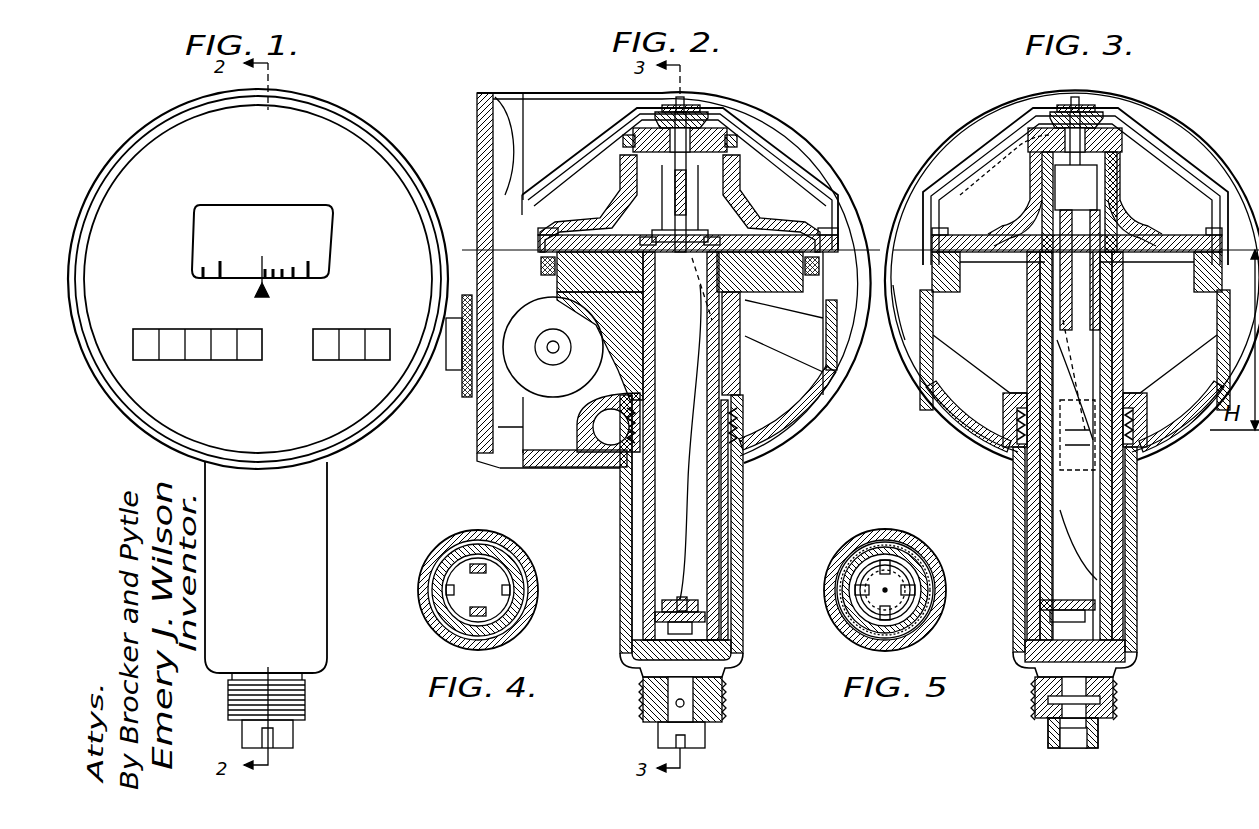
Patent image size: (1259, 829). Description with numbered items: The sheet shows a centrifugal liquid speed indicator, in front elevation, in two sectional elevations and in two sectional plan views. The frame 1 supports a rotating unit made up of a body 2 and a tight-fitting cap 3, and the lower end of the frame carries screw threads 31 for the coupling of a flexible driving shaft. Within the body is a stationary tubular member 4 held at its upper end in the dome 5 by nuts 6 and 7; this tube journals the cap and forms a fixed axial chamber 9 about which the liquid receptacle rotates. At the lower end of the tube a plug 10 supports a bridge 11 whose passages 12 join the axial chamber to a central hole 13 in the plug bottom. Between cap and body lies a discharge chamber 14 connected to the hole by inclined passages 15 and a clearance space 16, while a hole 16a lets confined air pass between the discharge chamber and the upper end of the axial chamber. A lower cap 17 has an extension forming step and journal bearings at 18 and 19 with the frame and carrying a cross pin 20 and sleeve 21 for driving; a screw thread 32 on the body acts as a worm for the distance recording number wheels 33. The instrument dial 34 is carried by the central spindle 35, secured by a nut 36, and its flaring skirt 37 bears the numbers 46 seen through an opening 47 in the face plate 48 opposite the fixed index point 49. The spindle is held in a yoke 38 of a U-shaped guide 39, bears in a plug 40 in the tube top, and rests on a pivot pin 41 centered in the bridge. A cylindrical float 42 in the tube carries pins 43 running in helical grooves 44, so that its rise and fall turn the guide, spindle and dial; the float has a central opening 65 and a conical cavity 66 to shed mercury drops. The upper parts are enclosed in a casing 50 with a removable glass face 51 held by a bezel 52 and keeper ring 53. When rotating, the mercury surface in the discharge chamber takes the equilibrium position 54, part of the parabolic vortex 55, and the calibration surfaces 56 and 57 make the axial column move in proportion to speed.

In FIG. 1, the frame 1 is at (306, 546).
In FIG. 2, the frame 1 is at (740, 488).
In FIG. 3, the frame 1 is at (1137, 508).
In FIG. 4, the frame 1 is at (533, 577).
In FIG. 5, the frame 1 is at (900, 563).
In FIG. 2, the body 2 is at (753, 310).
In FIG. 3, the body 2 is at (1117, 542).
In FIG. 4, the body 2 is at (510, 565).
In FIG. 5, the body 2 is at (895, 556).
In FIG. 2, the cap 3 is at (747, 220).
In FIG. 2, the stationary tubular member 4 is at (776, 500).
In FIG. 3, the stationary tubular member 4 is at (1103, 565).
In FIG. 4, the stationary tubular member 4 is at (490, 553).
In FIG. 5, the stationary tubular member 4 is at (887, 553).
In FIG. 2, the dome 5 is at (780, 163).
In FIG. 3, the dome 5 is at (1180, 197).
In FIG. 2, the nut 6 is at (795, 127).
In FIG. 3, the nut 6 is at (1064, 244).
In FIG. 2, the nut 7 is at (730, 136).
In FIG. 2, the axial chamber 9 is at (693, 517).
In FIG. 2, the plug 10 is at (713, 625).
In FIG. 5, the plug 10 is at (868, 540).
In FIG. 2, the bridge 11 is at (653, 623).
In FIG. 5, the bridge 11 is at (920, 600).
In FIG. 5, the passages 12 is at (905, 583).
In FIG. 2, the central hole 13 is at (660, 657).
In FIG. 2, the discharge chamber 14 is at (622, 230).
In FIG. 2, the inclined passages 15 is at (738, 347).
In FIG. 2, the clearance space 16 is at (643, 508).
In FIG. 3, the hole 16a is at (1140, 220).
In FIG. 2, the cap 17 is at (653, 640).
In FIG. 3, the cap 17 is at (1130, 648).
In FIG. 5, the cap 17 is at (920, 562).
In FIG. 2, the step bearing 18 is at (647, 682).
In FIG. 2, the journal bearing 19 is at (728, 679).
In FIG. 2, the cross pin 20 is at (697, 703).
In FIG. 3, the cross pin 20 is at (1113, 699).
In FIG. 1, the sleeve 21 is at (284, 738).
In FIG. 2, the sleeve 21 is at (710, 727).
In FIG. 3, the sleeve 21 is at (1053, 735).
In FIG. 1, the screw threads 31 is at (305, 694).
In FIG. 2, the screw threads 31 is at (647, 714).
In FIG. 2, the screw thread 32 is at (626, 432).
In FIG. 1, the distance recording number wheels 33 is at (226, 362).
In FIG. 2, the distance recording number wheels 33 is at (530, 380).
In FIG. 2, the instrument dial 34 is at (572, 163).
In FIG. 3, the instrument dial 34 is at (1163, 143).
In FIG. 2, the central spindle 35 is at (702, 121).
In FIG. 3, the central spindle 35 is at (1100, 120).
In FIG. 2, the nut 36 is at (683, 110).
In FIG. 3, the nut 36 is at (1090, 105).
In FIG. 1, the skirt 37 is at (288, 215).
In FIG. 2, the skirt 37 is at (843, 232).
In FIG. 3, the skirt 37 is at (910, 237).
In FIG. 3, the yoke 38 is at (1076, 161).
In FIG. 4, the U-shaped guide 39 is at (477, 564).
In FIG. 2, the plug 40 is at (722, 130).
In FIG. 2, the pivot pin 41 is at (682, 616).
In FIG. 3, the cylindrical float 42 is at (1127, 300).
In FIG. 2, the pins 43 is at (733, 232).
In FIG. 2, the helical grooves 44 is at (733, 463).
In FIG. 3, the helical grooves 44 is at (1073, 520).
In FIG. 1, the numbers 46 is at (262, 216).
In FIG. 1, the opening 47 is at (323, 243).
In FIG. 1, the face plate 48 is at (294, 266).
In FIG. 2, the face plate 48 is at (498, 436).
In FIG. 1, the fixed index point 49 is at (268, 291).
In FIG. 2, the casing 50 is at (832, 172).
In FIG. 1, the glass face 51 is at (362, 160).
In FIG. 2, the glass face 51 is at (480, 152).
In FIG. 1, the bezel 52 is at (344, 116).
In FIG. 2, the bezel 52 is at (506, 92).
In FIG. 2, the keeper ring 53 is at (511, 107).
In FIG. 3, the free surface of the mercury 54 is at (1003, 230).
In FIG. 3, the parabolic vortex 55 is at (1137, 271).
In FIG. 3, the calibration surface 56 is at (1013, 170).
In FIG. 3, the calibration surface 57 is at (930, 225).
In FIG. 3, the central opening 65 is at (1055, 300).
In FIG. 3, the conical cavity 66 is at (1120, 217).